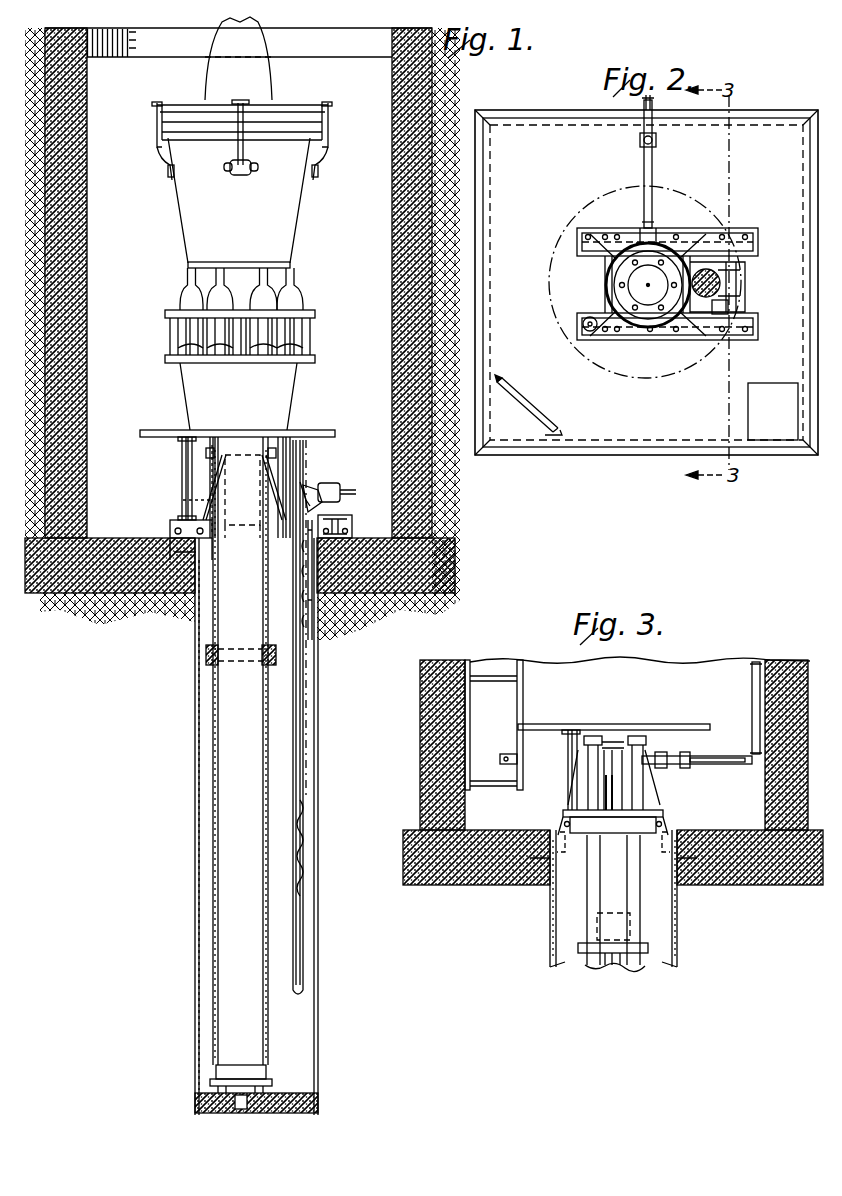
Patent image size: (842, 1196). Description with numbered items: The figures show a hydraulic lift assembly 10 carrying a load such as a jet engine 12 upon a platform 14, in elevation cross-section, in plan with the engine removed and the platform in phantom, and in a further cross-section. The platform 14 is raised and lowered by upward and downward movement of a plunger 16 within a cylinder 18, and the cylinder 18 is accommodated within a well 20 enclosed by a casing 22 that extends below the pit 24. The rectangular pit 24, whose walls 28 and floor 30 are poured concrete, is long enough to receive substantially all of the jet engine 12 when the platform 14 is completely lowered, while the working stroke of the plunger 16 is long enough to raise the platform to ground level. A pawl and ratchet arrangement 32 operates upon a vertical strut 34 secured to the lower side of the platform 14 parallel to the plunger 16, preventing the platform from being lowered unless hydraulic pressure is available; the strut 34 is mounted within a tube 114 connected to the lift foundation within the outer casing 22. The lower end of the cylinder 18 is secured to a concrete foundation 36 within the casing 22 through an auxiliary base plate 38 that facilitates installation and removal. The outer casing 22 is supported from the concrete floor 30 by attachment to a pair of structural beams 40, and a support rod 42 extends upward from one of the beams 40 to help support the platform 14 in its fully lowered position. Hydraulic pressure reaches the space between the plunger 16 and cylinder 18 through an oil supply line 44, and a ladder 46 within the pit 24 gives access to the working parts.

In FIG. 1, the hydraulic lift assembly 10 is at (251, 840).
In FIG. 1, the jet engine 12 is at (282, 218).
In FIG. 1, the platform 14 is at (305, 430).
In FIG. 2, the platform 14 is at (660, 366).
In FIG. 3, the platform 14 is at (658, 724).
In FIG. 1, the plunger 16 is at (255, 842).
In FIG. 1, the cylinder 18 is at (215, 790).
In FIG. 1, the well 20 is at (288, 1037).
In FIG. 1, the casing 22 is at (392, 42).
In FIG. 1, the pit 24 is at (372, 172).
In FIG. 1, the walls 28 is at (87, 84).
In FIG. 3, the walls 28 is at (465, 803).
In FIG. 1, the floor 30 is at (97, 540).
In FIG. 1, the pawl and ratchet arrangement 32 is at (310, 486).
In FIG. 2, the pawl and ratchet arrangement 32 is at (735, 300).
In FIG. 1, the vertical strut 34 is at (304, 752).
In FIG. 2, the vertical strut 34 is at (716, 268).
In FIG. 1, the concrete foundation 36 is at (297, 1113).
In FIG. 1, the auxiliary base plate 38 is at (246, 1113).
In FIG. 1, the structural beams 40 is at (178, 524).
In FIG. 2, the structural beams 40 is at (592, 236).
In FIG. 3, the structural beams 40 is at (660, 818).
In FIG. 1, the support rod 42 is at (182, 480).
In FIG. 2, the support rod 42 is at (592, 338).
In FIG. 3, the support rod 42 is at (568, 763).
In FIG. 2, the oil supply line 44 is at (643, 168).
In FIG. 3, the oil supply line 44 is at (754, 704).
In FIG. 2, the ladder 46 is at (524, 404).
In FIG. 3, the ladder 46 is at (523, 702).
In FIG. 1, the tube 114 is at (313, 640).